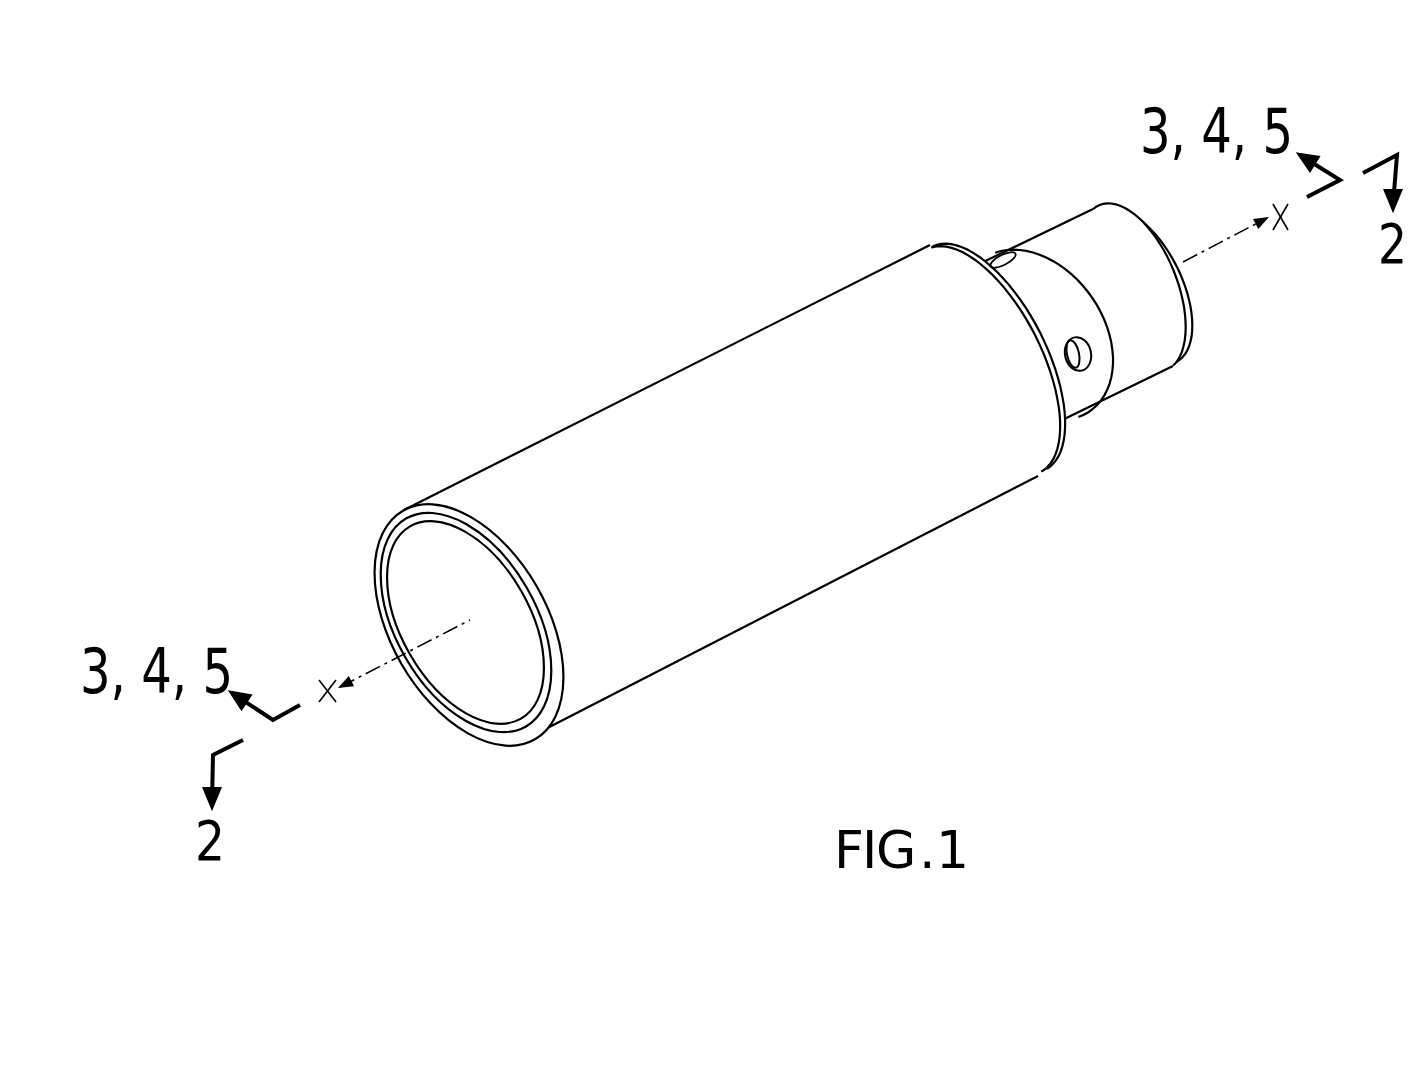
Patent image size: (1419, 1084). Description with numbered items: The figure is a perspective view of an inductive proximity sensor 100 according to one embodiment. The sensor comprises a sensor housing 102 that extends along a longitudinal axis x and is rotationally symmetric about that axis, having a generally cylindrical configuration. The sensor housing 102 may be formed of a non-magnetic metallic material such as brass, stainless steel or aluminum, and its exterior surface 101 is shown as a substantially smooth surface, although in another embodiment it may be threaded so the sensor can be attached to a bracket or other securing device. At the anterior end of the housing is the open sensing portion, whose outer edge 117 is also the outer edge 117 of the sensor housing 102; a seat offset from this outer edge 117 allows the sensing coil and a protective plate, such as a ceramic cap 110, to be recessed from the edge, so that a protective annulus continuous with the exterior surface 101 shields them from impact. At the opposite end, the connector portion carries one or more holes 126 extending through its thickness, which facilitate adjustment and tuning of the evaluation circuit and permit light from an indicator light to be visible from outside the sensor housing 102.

The inductive proximity sensor 100 is at (721, 470).
The exterior surface 101 is at (853, 560).
The sensor housing 102 is at (922, 342).
The ceramic cap 110 is at (445, 692).
The outer edge 117 is at (459, 593).
The holes 126 is at (1066, 353).